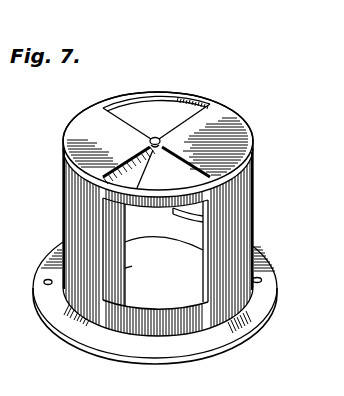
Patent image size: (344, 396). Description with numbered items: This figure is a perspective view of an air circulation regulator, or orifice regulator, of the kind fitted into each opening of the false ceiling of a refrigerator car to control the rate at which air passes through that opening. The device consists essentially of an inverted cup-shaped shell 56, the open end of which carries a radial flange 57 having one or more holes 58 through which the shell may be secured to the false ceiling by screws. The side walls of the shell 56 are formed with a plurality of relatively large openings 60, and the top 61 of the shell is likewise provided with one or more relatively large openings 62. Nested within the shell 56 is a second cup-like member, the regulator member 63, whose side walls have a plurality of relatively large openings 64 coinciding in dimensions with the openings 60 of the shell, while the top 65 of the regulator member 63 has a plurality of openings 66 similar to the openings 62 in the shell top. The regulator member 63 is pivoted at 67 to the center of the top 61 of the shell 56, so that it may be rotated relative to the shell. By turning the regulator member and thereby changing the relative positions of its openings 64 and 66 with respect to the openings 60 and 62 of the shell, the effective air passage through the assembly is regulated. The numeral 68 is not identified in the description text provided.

The inverted cup-shaped shell 56 is at (57, 304).
The radial flange 57 is at (254, 307).
The holes 58 is at (265, 280).
The openings 60 is at (108, 300).
The top 61 is at (227, 152).
The openings 62 is at (186, 175).
The regulator member 63 is at (130, 287).
The openings 64 is at (176, 290).
The top 65 is at (204, 107).
The openings 66 is at (145, 115).
The pivot 67 is at (160, 137).
The cylindrical housing 68 is at (253, 226).